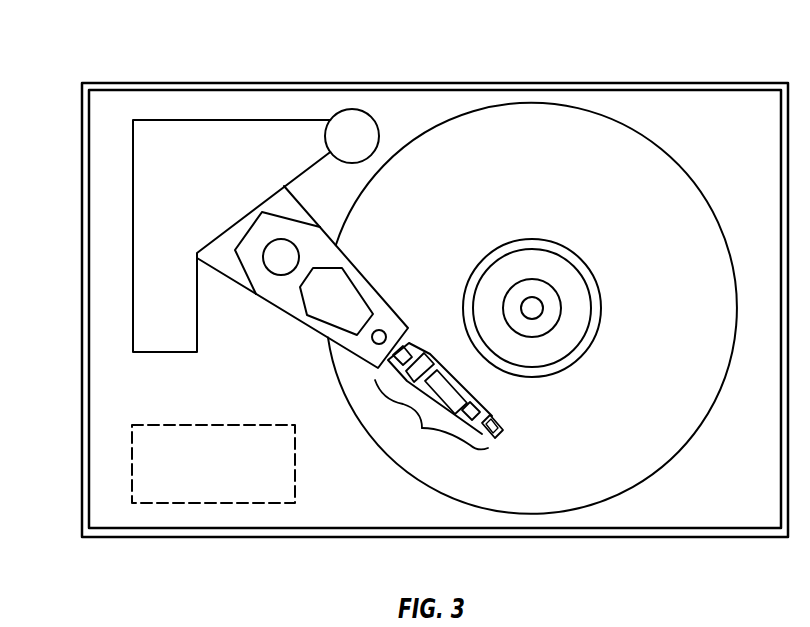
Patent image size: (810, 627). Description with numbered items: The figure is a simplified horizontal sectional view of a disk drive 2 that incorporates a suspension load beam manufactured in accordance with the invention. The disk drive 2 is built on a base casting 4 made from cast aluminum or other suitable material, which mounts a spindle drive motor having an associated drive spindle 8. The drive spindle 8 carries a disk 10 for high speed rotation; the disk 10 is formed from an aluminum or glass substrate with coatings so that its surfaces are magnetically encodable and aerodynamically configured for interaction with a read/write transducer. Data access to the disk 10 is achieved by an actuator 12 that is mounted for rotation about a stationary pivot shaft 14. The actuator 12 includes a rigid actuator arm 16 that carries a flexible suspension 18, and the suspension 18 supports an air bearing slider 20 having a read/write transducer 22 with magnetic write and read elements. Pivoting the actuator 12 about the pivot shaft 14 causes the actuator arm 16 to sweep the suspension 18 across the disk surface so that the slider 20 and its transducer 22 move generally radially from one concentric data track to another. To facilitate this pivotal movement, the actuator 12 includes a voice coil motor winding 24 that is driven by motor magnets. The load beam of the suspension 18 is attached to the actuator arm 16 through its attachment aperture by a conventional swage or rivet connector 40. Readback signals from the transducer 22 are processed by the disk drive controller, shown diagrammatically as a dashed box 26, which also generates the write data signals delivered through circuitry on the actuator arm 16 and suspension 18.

The disk drive 2 is at (86, 52).
The base casting 4 is at (435, 82).
The drive spindle 8 is at (533, 308).
The disk 10 is at (670, 321).
The actuator 12 is at (275, 300).
The pivot shaft 14 is at (280, 257).
The actuator arm 16 is at (320, 330).
The suspension 18 is at (422, 428).
The air bearing slider 20 is at (510, 410).
The read/write transducer 22 is at (498, 437).
The voice coil motor winding 24 is at (292, 206).
The controller 26 is at (295, 462).
The swage or rivet connector 40 is at (382, 330).